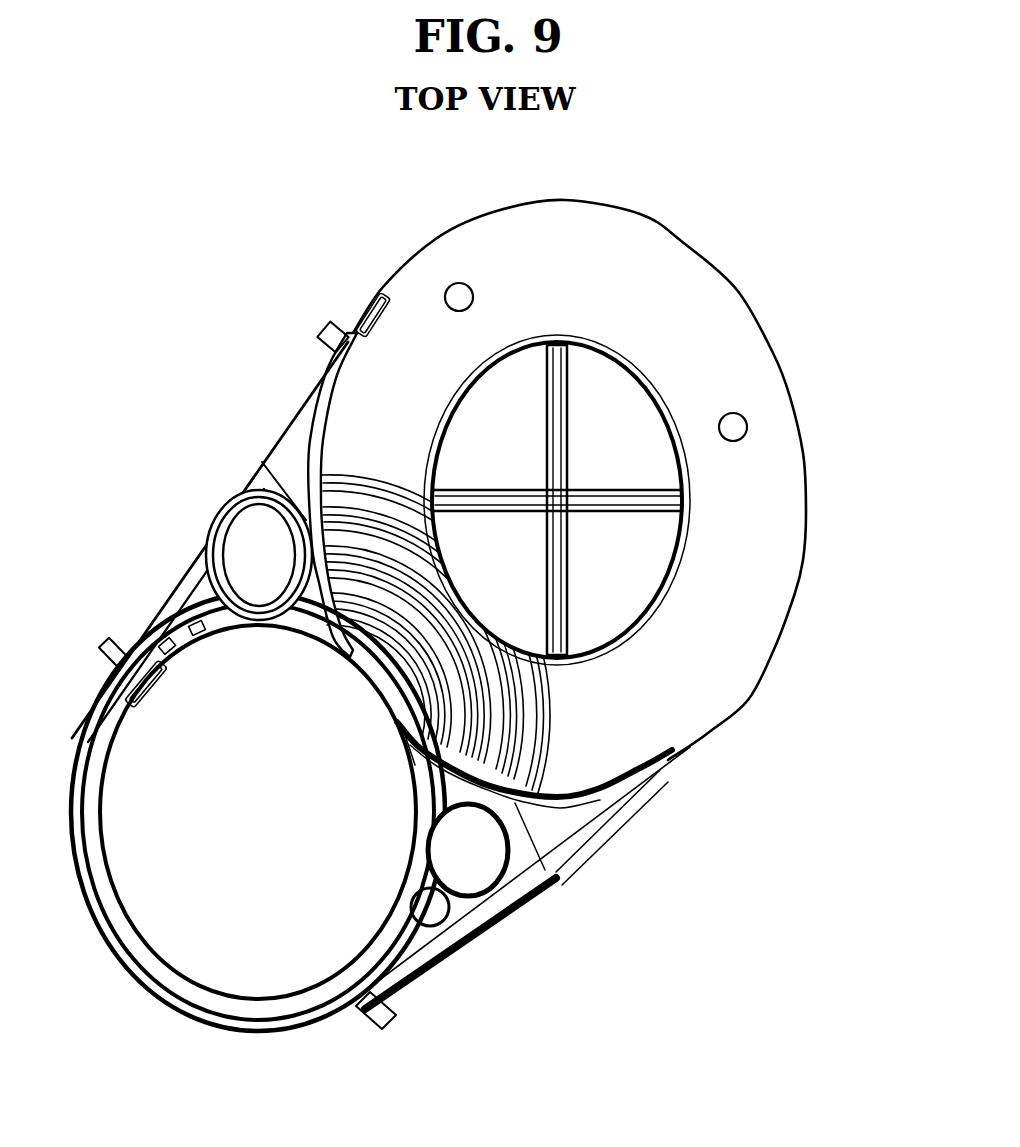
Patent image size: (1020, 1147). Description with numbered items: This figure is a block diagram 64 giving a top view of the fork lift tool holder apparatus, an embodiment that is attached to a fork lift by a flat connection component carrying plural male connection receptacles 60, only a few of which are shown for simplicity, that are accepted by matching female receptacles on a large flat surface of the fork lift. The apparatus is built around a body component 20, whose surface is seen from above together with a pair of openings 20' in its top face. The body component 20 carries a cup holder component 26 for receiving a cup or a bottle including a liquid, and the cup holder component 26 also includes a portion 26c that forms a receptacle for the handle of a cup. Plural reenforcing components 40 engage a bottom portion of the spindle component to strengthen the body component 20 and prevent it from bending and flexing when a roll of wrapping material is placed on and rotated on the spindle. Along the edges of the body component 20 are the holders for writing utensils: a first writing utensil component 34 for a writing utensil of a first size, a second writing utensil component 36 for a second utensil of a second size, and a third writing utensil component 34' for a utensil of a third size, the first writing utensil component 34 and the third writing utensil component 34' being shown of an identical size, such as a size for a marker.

The block diagram 64 is at (778, 128).
The body component 20 is at (445, 461).
The mounting holes 20' is at (654, 304).
The male connection receptacles 60 is at (328, 330).
The reenforcing components 40 is at (385, 505).
The cup holder component 26 is at (572, 503).
The receptacle portion for a handle of a cup 26c is at (403, 682).
The third writing utensil component 34' is at (259, 555).
The first writing utensil component 34 is at (468, 850).
The second writing utensil component 36 is at (437, 897).